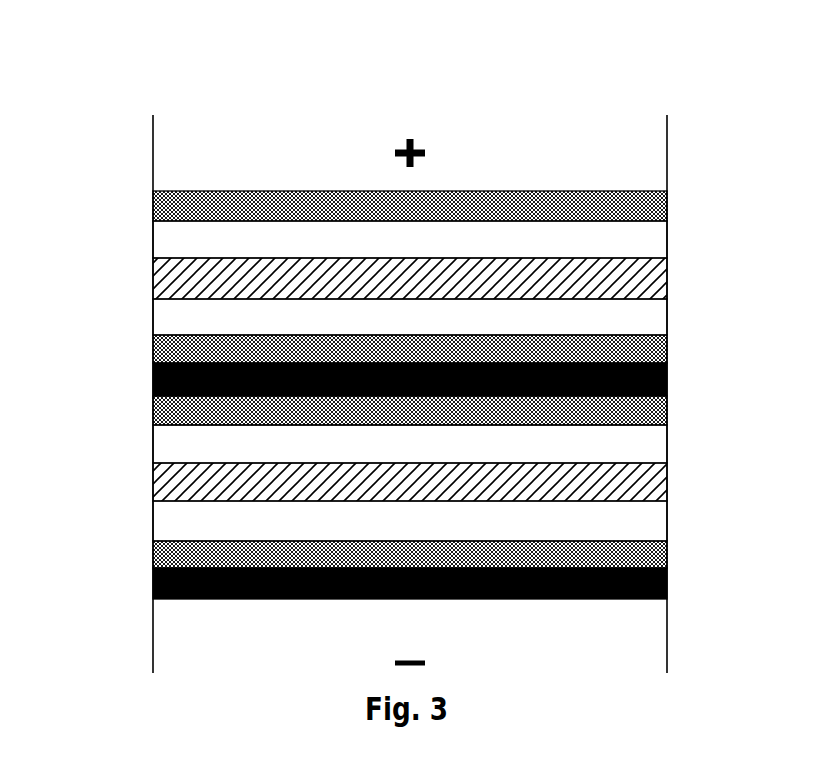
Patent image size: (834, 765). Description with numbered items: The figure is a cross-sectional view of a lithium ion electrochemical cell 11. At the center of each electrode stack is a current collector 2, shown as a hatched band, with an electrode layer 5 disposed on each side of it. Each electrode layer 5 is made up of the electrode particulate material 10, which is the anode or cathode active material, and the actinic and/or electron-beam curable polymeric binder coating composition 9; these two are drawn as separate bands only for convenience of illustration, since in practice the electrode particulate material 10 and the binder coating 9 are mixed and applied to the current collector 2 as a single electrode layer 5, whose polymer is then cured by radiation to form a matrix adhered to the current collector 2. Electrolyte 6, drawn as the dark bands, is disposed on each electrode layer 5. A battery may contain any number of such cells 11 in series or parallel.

The lithium ion electrochemical cell 11 is at (560, 123).
The polymeric binder coating composition 9 is at (682, 211).
The electrode particulate material 10 is at (682, 245).
The electrode layer 5 is at (760, 197).
The electrode current collector 2 is at (682, 285).
The electrolyte 6 is at (682, 386).